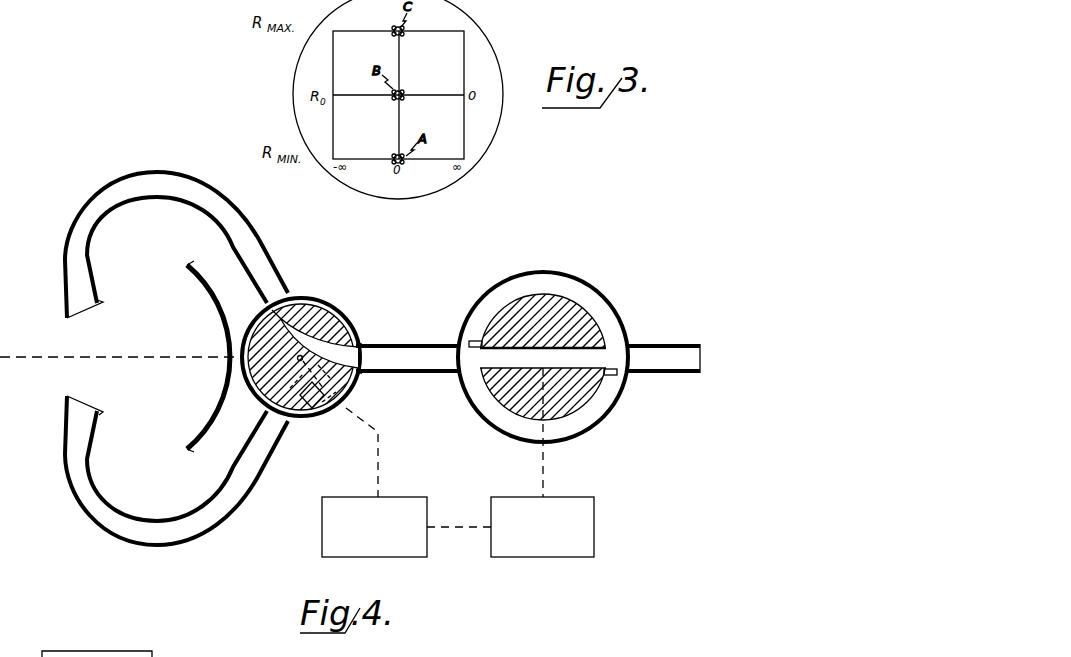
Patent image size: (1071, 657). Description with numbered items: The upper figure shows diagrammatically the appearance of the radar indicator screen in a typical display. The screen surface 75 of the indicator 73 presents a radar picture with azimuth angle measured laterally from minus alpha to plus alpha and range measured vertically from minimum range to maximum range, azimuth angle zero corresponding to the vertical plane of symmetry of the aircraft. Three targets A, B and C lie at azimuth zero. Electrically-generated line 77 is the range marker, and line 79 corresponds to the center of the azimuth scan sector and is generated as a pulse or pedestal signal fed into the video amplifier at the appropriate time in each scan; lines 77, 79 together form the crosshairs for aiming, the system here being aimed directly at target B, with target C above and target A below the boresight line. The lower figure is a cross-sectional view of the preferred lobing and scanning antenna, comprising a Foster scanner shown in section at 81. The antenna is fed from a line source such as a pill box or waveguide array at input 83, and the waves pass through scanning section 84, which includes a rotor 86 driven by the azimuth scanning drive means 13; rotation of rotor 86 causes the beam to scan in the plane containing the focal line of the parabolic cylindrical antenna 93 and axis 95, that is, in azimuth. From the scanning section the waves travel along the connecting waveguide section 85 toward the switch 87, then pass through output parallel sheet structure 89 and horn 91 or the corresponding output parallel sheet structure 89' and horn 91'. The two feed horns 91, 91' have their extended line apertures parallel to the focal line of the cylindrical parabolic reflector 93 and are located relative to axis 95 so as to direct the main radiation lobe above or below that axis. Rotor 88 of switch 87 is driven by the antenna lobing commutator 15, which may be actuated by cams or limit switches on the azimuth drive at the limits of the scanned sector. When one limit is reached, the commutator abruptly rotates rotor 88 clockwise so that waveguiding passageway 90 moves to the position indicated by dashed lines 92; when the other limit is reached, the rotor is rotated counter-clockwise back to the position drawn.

In FIG. 4, the azimuth scanning drive means 13 is at (580, 498).
In FIG. 4, the antenna lobing commutator 15 is at (405, 498).
In FIG. 3, the indicator screen 73 is at (487, 150).
In FIG. 3, the screen surface 75 is at (484, 45).
In FIG. 3, the electrically-generated line 77 is at (424, 95).
In FIG. 3, the line 79 is at (398, 120).
In FIG. 4, the Foster scanner 81 is at (349, 260).
In FIG. 4, the input 83 is at (706, 348).
In FIG. 4, the scanning section 84 is at (609, 268).
In FIG. 4, the waveguide section 85 is at (403, 345).
In FIG. 4, the rotor 86 is at (608, 343).
In FIG. 4, the switch 87 is at (362, 331).
In FIG. 4, the rotor 88 is at (342, 312).
In FIG. 4, the output parallel sheet structure 89 is at (176, 484).
In FIG. 4, the output parallel sheet structure 89' is at (176, 245).
In FIG. 4, the waveguiding passageway 90 is at (312, 318).
In FIG. 4, the horn 91 is at (60, 403).
In FIG. 4, the horn 91' is at (62, 314).
In FIG. 4, the dashed lines 92 is at (308, 410).
In FIG. 4, the parabolic cylindrical antenna 93 is at (193, 266).
In FIG. 4, the axis 95 is at (91, 357).